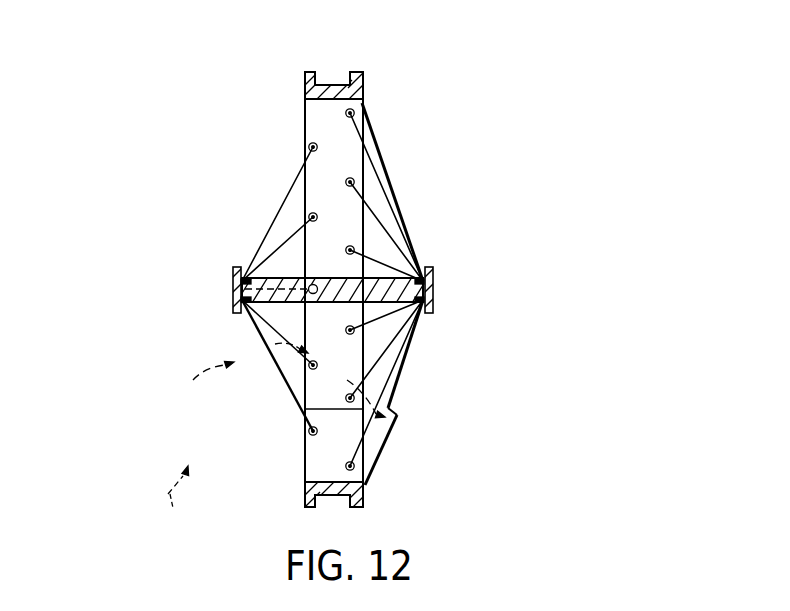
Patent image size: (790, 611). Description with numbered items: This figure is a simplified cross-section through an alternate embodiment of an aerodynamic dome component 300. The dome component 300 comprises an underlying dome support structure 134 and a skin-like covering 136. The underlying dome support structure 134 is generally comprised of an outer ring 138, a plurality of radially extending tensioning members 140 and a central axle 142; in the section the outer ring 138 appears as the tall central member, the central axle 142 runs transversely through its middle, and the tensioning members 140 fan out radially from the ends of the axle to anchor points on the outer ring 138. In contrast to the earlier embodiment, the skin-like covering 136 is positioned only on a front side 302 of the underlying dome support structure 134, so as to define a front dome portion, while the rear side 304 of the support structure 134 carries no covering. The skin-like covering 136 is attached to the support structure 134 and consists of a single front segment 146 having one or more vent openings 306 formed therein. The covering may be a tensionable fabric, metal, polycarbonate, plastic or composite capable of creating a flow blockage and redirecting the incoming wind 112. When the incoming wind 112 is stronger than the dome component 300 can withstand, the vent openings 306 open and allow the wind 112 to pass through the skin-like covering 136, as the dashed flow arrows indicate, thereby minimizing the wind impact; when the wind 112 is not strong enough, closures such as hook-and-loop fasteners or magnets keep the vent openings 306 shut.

The aerodynamic dome component 300 is at (400, 59).
The front side 302 is at (492, 161).
The rear side 304 is at (165, 242).
The vent openings 306 is at (393, 415).
The wind 112 is at (168, 494).
The underlying dome support structure 134 is at (205, 289).
The skin-like covering 136 is at (448, 392).
The outer ring 138 is at (318, 112).
The tensioning members 140 is at (366, 294).
The central axle 142 is at (433, 290).
The front segment 146 is at (375, 458).